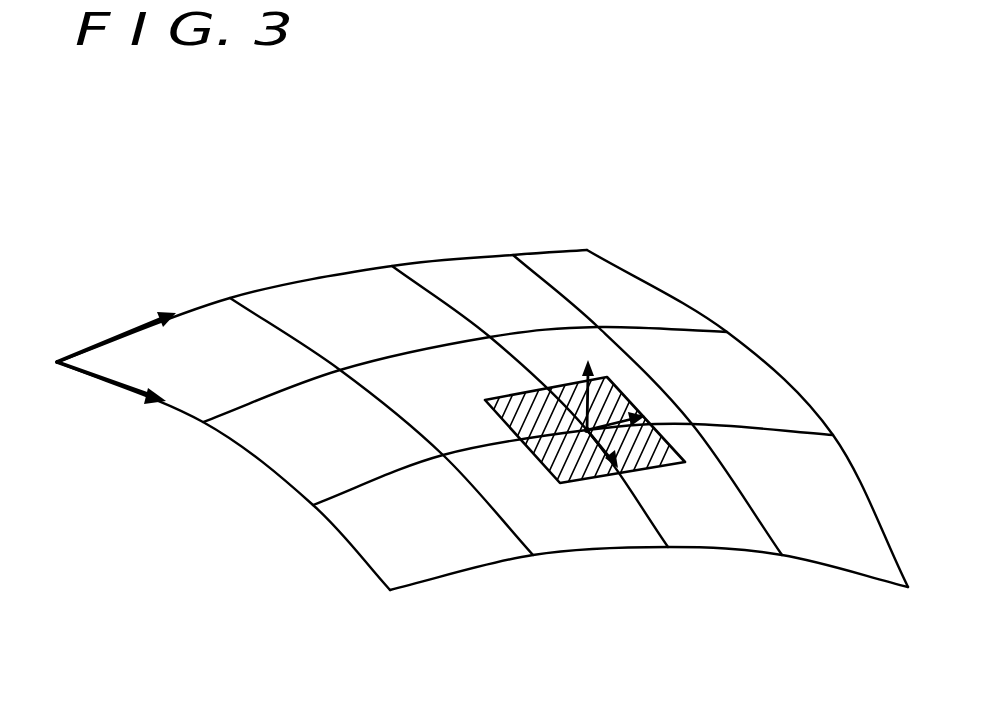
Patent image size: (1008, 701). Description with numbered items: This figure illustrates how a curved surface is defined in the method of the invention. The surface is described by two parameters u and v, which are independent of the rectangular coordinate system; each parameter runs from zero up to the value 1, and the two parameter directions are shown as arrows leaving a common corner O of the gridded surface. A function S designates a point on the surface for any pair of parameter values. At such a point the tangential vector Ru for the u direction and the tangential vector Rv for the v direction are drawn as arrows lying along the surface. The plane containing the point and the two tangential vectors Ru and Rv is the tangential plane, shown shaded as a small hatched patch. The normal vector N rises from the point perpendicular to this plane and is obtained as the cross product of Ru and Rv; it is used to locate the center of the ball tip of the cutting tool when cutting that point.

The normal vector N is at (575, 381).
The tangential vector for the u direction Ru is at (620, 413).
The tangential vector for the v direction Rv is at (599, 443).
The origin of parametric coordinate system O is at (39, 363).
The parameter u is at (116, 312).
The parameter v is at (111, 401).
The upper limit of the parameter range 1 is at (491, 421).